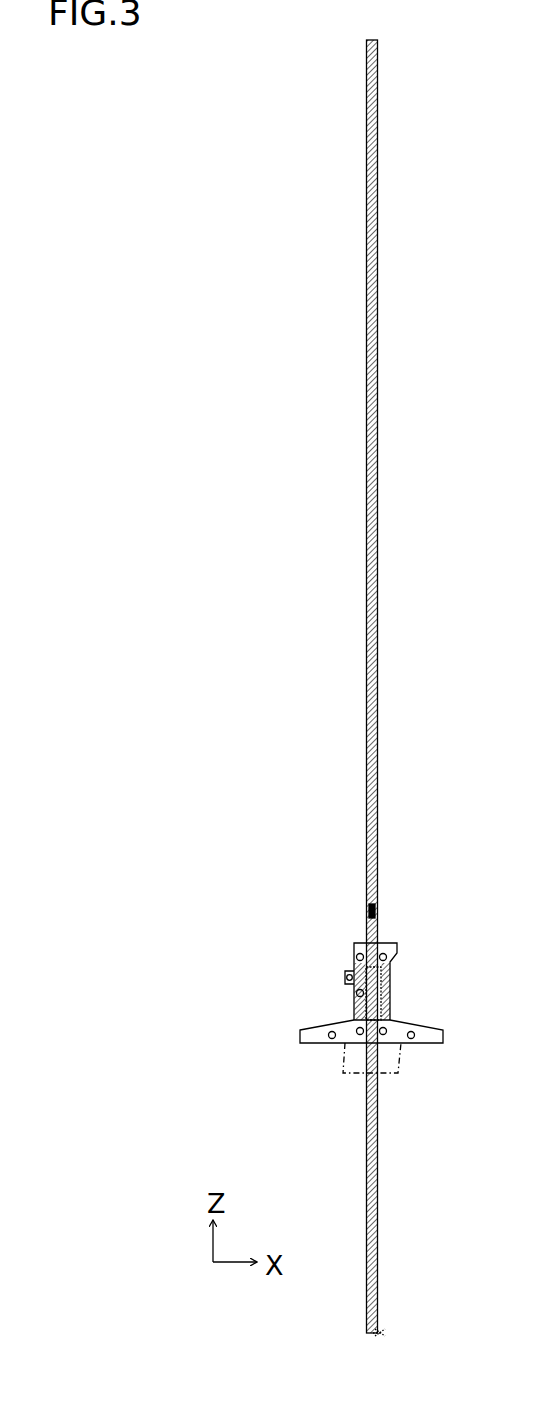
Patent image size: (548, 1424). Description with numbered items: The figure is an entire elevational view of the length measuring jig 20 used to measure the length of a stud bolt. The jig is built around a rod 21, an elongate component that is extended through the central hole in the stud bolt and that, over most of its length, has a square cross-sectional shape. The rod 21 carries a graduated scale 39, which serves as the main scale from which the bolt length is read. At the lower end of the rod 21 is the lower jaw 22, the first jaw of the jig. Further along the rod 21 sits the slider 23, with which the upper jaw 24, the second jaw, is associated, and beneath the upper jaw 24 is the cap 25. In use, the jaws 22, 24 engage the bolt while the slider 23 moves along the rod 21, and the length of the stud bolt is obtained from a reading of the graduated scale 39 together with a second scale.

The length measuring jig 20 is at (273, 710).
The rod 21 is at (377, 815).
The lower jaw 22 is at (379, 1336).
The slider 23 is at (390, 990).
The upper jaw 24 is at (310, 1026).
The cap 25 is at (350, 1078).
The graduated scale 39 is at (373, 917).